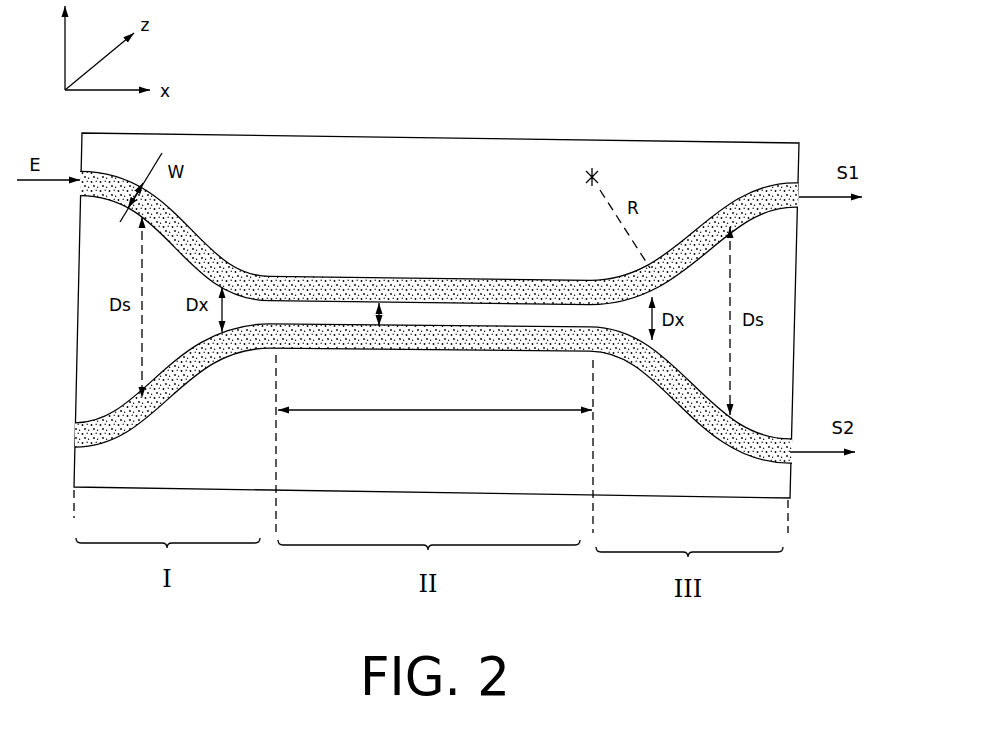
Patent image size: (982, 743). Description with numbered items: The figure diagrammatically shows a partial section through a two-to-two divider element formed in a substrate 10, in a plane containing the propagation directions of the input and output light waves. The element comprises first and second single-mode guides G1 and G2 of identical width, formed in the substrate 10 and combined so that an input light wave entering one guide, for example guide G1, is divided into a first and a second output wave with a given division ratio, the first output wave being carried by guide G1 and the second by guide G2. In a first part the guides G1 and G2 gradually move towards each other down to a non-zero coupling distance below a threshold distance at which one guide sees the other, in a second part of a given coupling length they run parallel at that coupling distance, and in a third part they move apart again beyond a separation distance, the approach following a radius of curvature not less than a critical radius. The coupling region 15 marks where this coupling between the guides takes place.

The substrate 10 is at (448, 136).
The coupling region 15 is at (362, 261).
The first guide G1 is at (522, 279).
The second guide G2 is at (543, 353).